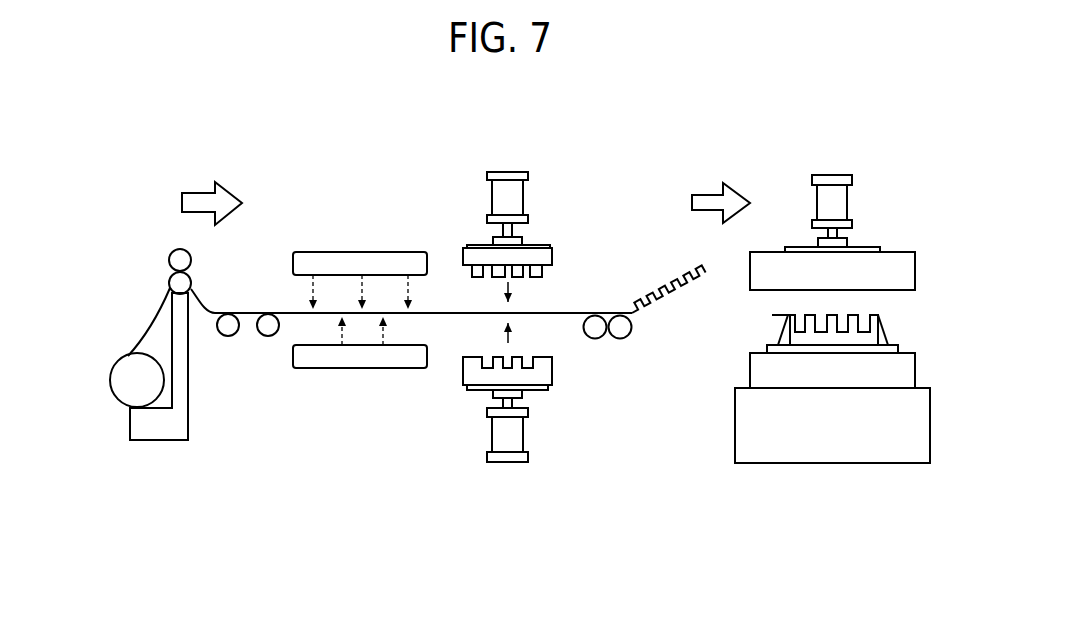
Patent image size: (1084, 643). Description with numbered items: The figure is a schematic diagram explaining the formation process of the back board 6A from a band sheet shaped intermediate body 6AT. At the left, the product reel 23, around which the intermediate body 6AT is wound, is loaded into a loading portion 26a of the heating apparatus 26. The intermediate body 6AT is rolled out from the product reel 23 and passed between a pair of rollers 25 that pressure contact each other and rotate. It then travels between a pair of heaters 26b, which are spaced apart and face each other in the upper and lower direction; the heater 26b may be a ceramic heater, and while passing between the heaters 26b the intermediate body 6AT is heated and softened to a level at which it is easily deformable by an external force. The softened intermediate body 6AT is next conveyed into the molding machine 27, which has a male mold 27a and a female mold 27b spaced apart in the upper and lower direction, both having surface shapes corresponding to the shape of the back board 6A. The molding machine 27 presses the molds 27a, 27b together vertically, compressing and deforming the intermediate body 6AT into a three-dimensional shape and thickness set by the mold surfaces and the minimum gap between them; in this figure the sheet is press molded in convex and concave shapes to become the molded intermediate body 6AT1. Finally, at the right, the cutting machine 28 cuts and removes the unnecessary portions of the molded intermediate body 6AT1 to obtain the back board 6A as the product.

The product reel 23 is at (125, 385).
The rollers 25 is at (168, 281).
The heating apparatus 26 is at (433, 158).
The loading portion 26a is at (105, 258).
The heaters 26b is at (373, 232).
The molding machine 27 is at (578, 465).
The male mold 27a is at (538, 280).
The female mold 27b is at (552, 358).
The cutting machine 28 is at (895, 228).
The back board 6A is at (880, 315).
The intermediate body 6AT is at (152, 330).
The molded intermediate body 6AT1 is at (688, 295).